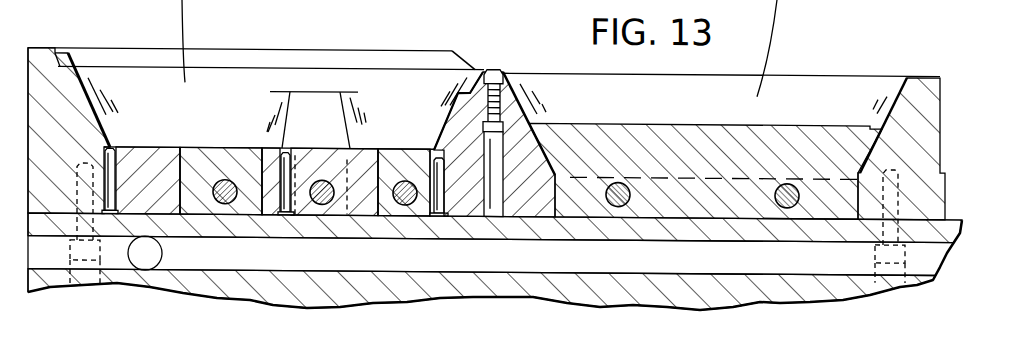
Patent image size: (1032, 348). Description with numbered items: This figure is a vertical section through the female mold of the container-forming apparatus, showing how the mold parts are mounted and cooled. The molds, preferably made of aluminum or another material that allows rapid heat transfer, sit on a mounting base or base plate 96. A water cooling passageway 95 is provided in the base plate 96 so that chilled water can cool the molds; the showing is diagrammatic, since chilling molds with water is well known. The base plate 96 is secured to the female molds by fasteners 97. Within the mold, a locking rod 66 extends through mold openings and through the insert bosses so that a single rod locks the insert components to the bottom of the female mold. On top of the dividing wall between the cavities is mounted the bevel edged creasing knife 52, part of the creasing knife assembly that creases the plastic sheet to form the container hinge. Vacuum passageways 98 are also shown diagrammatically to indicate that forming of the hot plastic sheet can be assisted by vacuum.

The bevel edged creasing knife 52 is at (498, 66).
The locking rod 66 is at (230, 196).
The water cooling passageway 95 is at (797, 271).
The base plate 96 is at (842, 284).
The fastener 97 is at (90, 259).
The vacuum passageway 98 is at (290, 161).